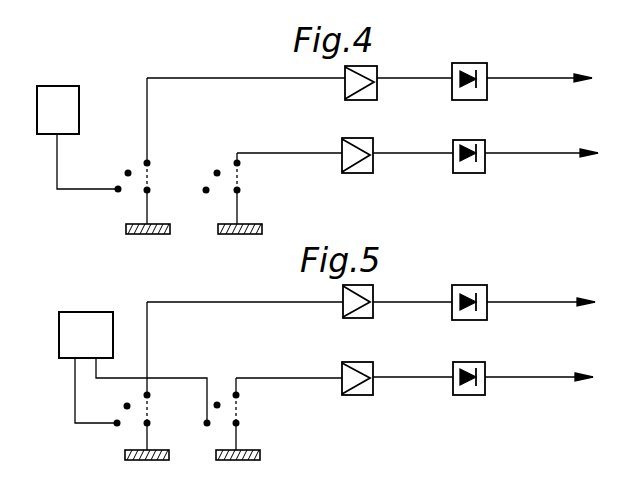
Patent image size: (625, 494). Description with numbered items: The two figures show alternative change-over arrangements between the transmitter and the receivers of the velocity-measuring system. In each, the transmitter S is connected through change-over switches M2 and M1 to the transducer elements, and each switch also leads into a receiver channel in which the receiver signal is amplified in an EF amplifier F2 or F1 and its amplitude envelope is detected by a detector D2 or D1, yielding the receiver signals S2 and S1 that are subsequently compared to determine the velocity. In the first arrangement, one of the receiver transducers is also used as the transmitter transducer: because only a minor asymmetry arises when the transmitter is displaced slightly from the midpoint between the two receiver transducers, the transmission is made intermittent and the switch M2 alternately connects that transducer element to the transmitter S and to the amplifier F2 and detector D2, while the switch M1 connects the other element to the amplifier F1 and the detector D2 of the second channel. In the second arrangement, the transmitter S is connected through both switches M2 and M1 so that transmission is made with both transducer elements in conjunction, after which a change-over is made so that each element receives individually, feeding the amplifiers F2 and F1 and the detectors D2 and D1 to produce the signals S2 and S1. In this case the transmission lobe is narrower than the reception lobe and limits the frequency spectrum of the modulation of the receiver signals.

In FIG. 4, the transmitter S is at (84, 139).
In FIG. 5, the transmitter S is at (140, 369).
In FIG. 4, the change-over switch M2 is at (148, 234).
In FIG. 5, the change-over switch M2 is at (153, 460).
In FIG. 4, the change-over switch M1 is at (238, 234).
In FIG. 5, the change-over switch M1 is at (240, 460).
In FIG. 4, the EF amplifier F2 is at (345, 84).
In FIG. 5, the EF amplifier F2 is at (345, 307).
In FIG. 4, the EF amplifier F1 is at (345, 146).
In FIG. 5, the EF amplifier F1 is at (345, 368).
In FIG. 4, the detector D2 is at (460, 90).
In FIG. 5, the detector D2 is at (456, 318).
In FIG. 5, the detector D1 is at (456, 388).
In FIG. 4, the receiver signal S2 is at (578, 74).
In FIG. 5, the receiver signal S2 is at (530, 304).
In FIG. 4, the receiver signal S1 is at (570, 150).
In FIG. 5, the receiver signal S1 is at (525, 378).